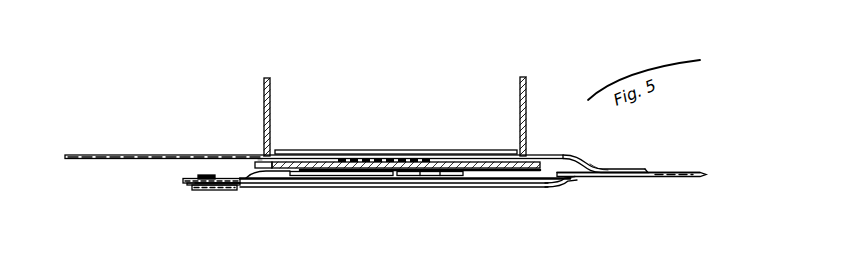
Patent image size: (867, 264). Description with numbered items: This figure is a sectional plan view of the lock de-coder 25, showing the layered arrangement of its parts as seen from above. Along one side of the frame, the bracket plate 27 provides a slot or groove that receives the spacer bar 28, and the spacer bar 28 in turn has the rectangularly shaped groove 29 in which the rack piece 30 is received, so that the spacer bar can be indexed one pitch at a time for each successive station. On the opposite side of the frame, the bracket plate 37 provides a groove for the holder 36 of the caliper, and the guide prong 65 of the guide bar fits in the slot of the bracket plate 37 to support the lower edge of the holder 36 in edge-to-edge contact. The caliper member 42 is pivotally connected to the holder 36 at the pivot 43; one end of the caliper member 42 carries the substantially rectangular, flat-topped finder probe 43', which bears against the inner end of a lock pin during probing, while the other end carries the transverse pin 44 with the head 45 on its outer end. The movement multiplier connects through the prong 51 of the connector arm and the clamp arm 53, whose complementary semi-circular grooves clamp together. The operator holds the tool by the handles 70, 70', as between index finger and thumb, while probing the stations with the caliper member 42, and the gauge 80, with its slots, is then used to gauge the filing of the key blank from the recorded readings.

The lock de-coder 25 is at (256, 153).
The bracket plate 27 is at (401, 156).
The spacer bar 28 is at (562, 154).
The rectangularly shaped groove 29 is at (436, 156).
The rack piece 30 is at (362, 156).
The holder 36 is at (607, 167).
The bracket plate 37 is at (257, 170).
The caliper member 42 is at (270, 188).
The pivotal connection 43 is at (631, 155).
The finder probe 43' is at (628, 191).
The pin 44 is at (208, 191).
The head 45 is at (206, 175).
The prong 51 is at (183, 182).
The clamp arm 53 is at (191, 189).
The guide prong 65 is at (559, 184).
The handle 70 is at (505, 115).
The handle 70' is at (285, 116).
The gauge 80 is at (138, 156).